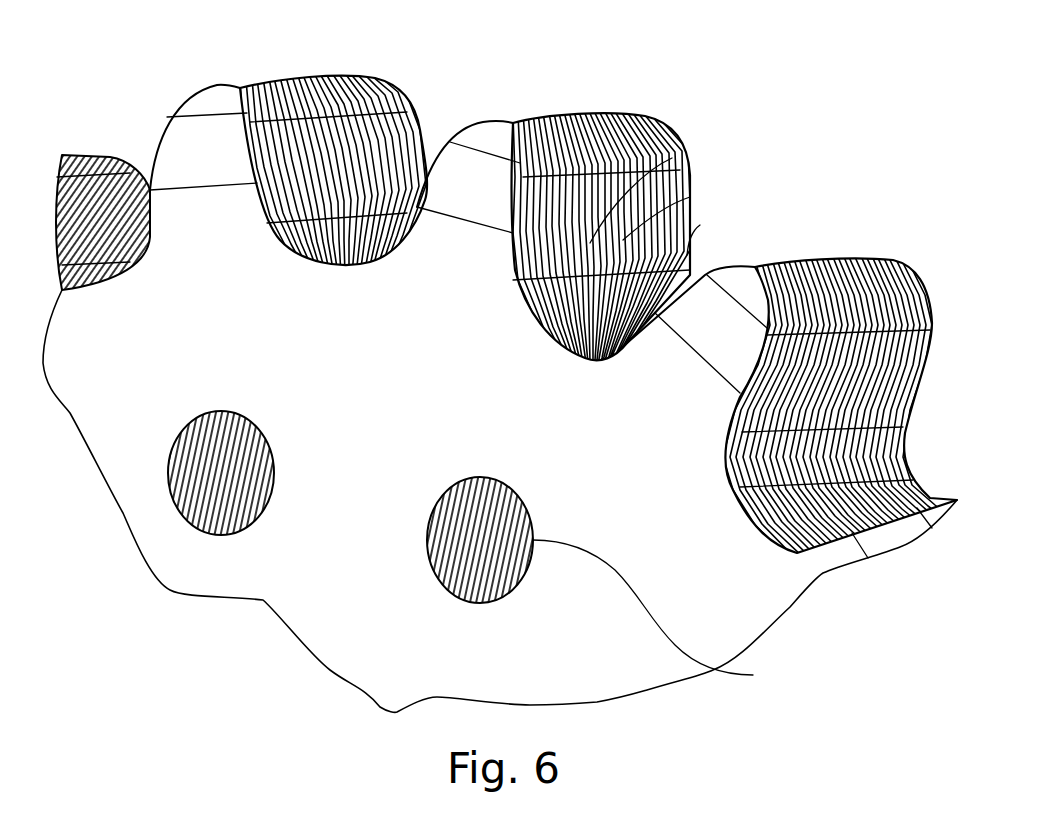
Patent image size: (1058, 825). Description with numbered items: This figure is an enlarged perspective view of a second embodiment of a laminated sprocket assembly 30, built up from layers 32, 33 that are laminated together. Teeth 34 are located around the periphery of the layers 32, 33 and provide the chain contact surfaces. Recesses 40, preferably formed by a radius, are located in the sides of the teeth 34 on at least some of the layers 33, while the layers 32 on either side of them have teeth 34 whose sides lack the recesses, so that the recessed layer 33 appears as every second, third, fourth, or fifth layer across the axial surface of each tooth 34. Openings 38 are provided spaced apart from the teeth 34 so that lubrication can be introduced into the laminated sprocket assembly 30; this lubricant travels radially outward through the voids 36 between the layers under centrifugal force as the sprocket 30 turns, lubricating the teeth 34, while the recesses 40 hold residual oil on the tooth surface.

The laminated sprocket assembly 30 is at (824, 156).
The layers 32 is at (628, 145).
The layers 33 is at (672, 158).
The teeth 34 is at (613, 115).
The voids 36 is at (700, 225).
The openings 38 is at (664, 616).
The recesses 40 is at (690, 197).